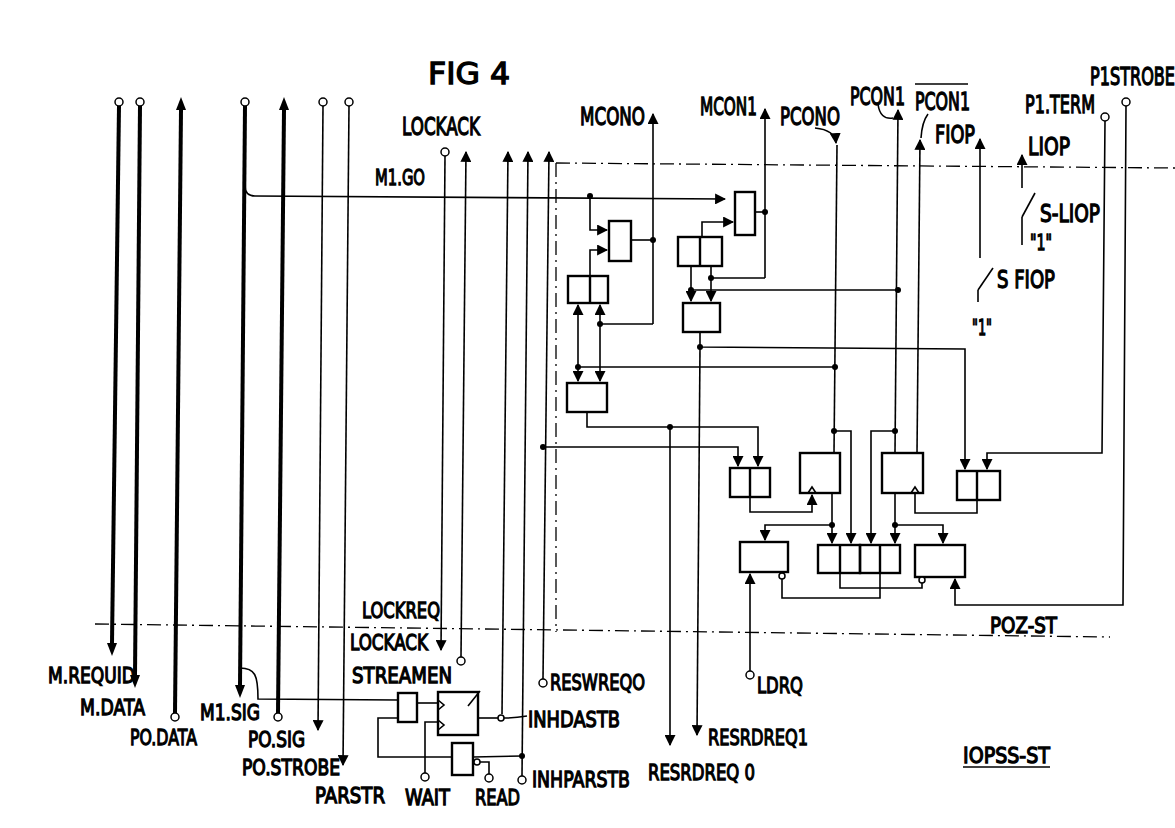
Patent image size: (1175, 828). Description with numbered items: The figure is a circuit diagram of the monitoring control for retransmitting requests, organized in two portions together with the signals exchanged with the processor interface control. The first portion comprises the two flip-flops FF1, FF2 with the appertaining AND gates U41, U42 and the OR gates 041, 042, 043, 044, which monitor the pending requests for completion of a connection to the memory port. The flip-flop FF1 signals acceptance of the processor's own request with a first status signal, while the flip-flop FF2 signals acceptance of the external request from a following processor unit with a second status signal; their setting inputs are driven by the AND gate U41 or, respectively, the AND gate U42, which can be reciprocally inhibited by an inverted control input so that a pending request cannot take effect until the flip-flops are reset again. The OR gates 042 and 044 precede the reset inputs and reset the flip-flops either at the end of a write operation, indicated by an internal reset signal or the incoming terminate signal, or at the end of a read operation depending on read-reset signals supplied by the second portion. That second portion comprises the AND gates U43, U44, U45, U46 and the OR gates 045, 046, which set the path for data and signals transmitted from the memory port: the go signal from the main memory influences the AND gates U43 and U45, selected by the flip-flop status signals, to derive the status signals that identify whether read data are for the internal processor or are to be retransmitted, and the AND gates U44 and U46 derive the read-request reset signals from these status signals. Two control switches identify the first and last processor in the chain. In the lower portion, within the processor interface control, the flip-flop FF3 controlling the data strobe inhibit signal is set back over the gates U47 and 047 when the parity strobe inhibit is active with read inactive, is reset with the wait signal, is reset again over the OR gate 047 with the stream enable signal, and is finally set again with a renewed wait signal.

The AND gate U41 is at (792, 610).
The AND gate U42 is at (985, 542).
The AND gate U43 is at (621, 223).
The AND gate U44 is at (662, 424).
The AND gate U45 is at (730, 206).
The AND gate U46 is at (824, 519).
The gate U47 is at (487, 752).
The OR gate 041 is at (827, 573).
The OR gate 042 is at (677, 487).
The OR gate 043 is at (893, 573).
The OR gate 044 is at (987, 412).
The OR gate 045 is at (608, 290).
The OR gate 046 is at (789, 269).
The OR gate 047 is at (415, 725).
The flip-flop FF1 is at (770, 408).
The flip-flop FF2 is at (929, 481).
The flip-flop FF3 is at (474, 716).